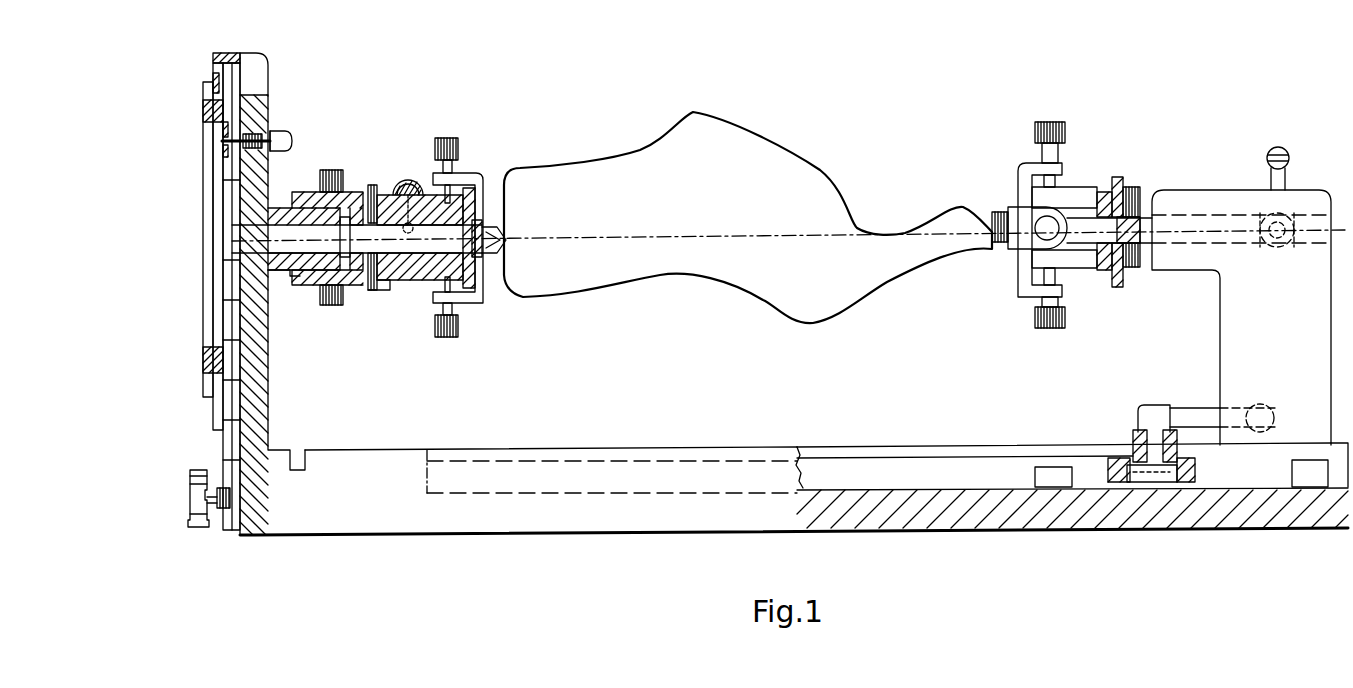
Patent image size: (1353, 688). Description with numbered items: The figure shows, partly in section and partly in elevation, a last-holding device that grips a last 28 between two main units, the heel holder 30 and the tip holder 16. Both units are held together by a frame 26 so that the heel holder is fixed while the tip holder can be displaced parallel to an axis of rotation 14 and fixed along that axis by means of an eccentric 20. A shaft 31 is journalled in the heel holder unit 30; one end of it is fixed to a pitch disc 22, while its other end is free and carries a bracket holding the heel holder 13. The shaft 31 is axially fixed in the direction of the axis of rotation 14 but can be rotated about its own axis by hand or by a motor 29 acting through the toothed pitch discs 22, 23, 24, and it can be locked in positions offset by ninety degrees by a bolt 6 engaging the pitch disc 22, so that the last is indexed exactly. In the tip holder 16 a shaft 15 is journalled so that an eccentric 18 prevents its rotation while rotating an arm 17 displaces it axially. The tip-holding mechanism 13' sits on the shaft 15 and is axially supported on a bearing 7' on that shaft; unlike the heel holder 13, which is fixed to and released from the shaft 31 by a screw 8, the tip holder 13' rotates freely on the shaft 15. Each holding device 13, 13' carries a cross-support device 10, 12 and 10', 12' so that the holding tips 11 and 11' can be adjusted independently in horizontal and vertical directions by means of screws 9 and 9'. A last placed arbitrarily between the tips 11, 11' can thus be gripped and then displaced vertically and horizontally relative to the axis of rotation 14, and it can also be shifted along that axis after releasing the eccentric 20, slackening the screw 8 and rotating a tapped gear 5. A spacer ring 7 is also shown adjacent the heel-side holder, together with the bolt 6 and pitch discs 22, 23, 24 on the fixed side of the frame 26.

The tapped gear 5 is at (325, 176).
The bolt 6 is at (281, 128).
The spacer ring 7 is at (361, 208).
The screw 8 is at (408, 182).
The screws 9 is at (446, 233).
The cross-support device 10 is at (475, 246).
The holding tip 11 is at (499, 256).
The cross-support device 12 is at (484, 214).
The heel holder 13 is at (415, 264).
The axis of rotation 14 is at (848, 232).
The shaft 15 is at (1141, 217).
The tip holder 16 is at (1190, 190).
The arm 17 is at (1286, 149).
The eccentric 18 is at (1263, 215).
The eccentric 20 is at (1140, 472).
The pitch disc 22 is at (225, 340).
The pitch disc 23 is at (232, 398).
The pitch disc 24 is at (226, 510).
The frame 26 is at (400, 466).
The last 28 is at (716, 190).
The motor 29 is at (200, 470).
The heel holder 30 is at (270, 412).
The shaft 31 is at (285, 246).
The bearing 7' is at (1119, 201).
The screws 9' is at (1068, 223).
The cross-support device 10' is at (1023, 247).
The holding tip 11' is at (987, 204).
The cross-support device 12' is at (1022, 251).
The tip holder 13' is at (1074, 198).